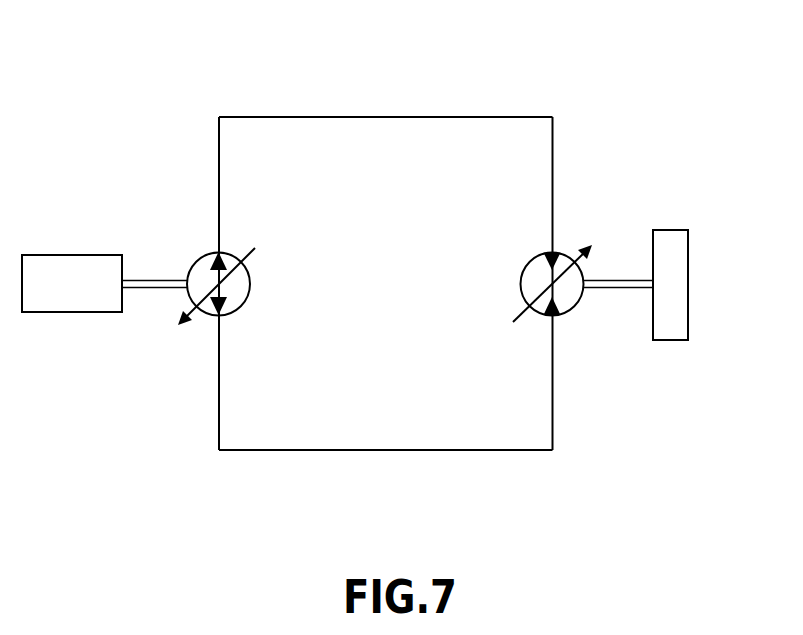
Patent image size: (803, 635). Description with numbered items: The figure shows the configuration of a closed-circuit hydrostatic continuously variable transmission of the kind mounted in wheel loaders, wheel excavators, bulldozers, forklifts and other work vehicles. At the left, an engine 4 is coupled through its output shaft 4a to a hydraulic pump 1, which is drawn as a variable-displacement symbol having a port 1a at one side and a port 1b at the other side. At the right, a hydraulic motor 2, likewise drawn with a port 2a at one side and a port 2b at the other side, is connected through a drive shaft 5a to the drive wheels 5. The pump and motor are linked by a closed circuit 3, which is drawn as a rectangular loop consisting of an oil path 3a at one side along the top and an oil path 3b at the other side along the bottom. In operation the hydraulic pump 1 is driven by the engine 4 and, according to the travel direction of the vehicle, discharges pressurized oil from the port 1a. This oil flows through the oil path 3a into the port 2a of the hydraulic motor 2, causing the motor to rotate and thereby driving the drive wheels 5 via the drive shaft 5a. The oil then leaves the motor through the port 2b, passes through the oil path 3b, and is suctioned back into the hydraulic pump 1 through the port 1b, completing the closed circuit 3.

The hydraulic pump 1 is at (167, 335).
The port 1a is at (218, 252).
The port 1b is at (218, 316).
The hydraulic motor 2 is at (612, 316).
The port 2a is at (552, 252).
The port 2b is at (548, 318).
The closed circuit 3 is at (386, 267).
The oil path 3a is at (300, 117).
The oil path 3b is at (305, 452).
The engine 4 is at (66, 255).
The output shaft 4a is at (157, 288).
The drive wheels 5 is at (672, 230).
The drive shaft 5a is at (621, 290).